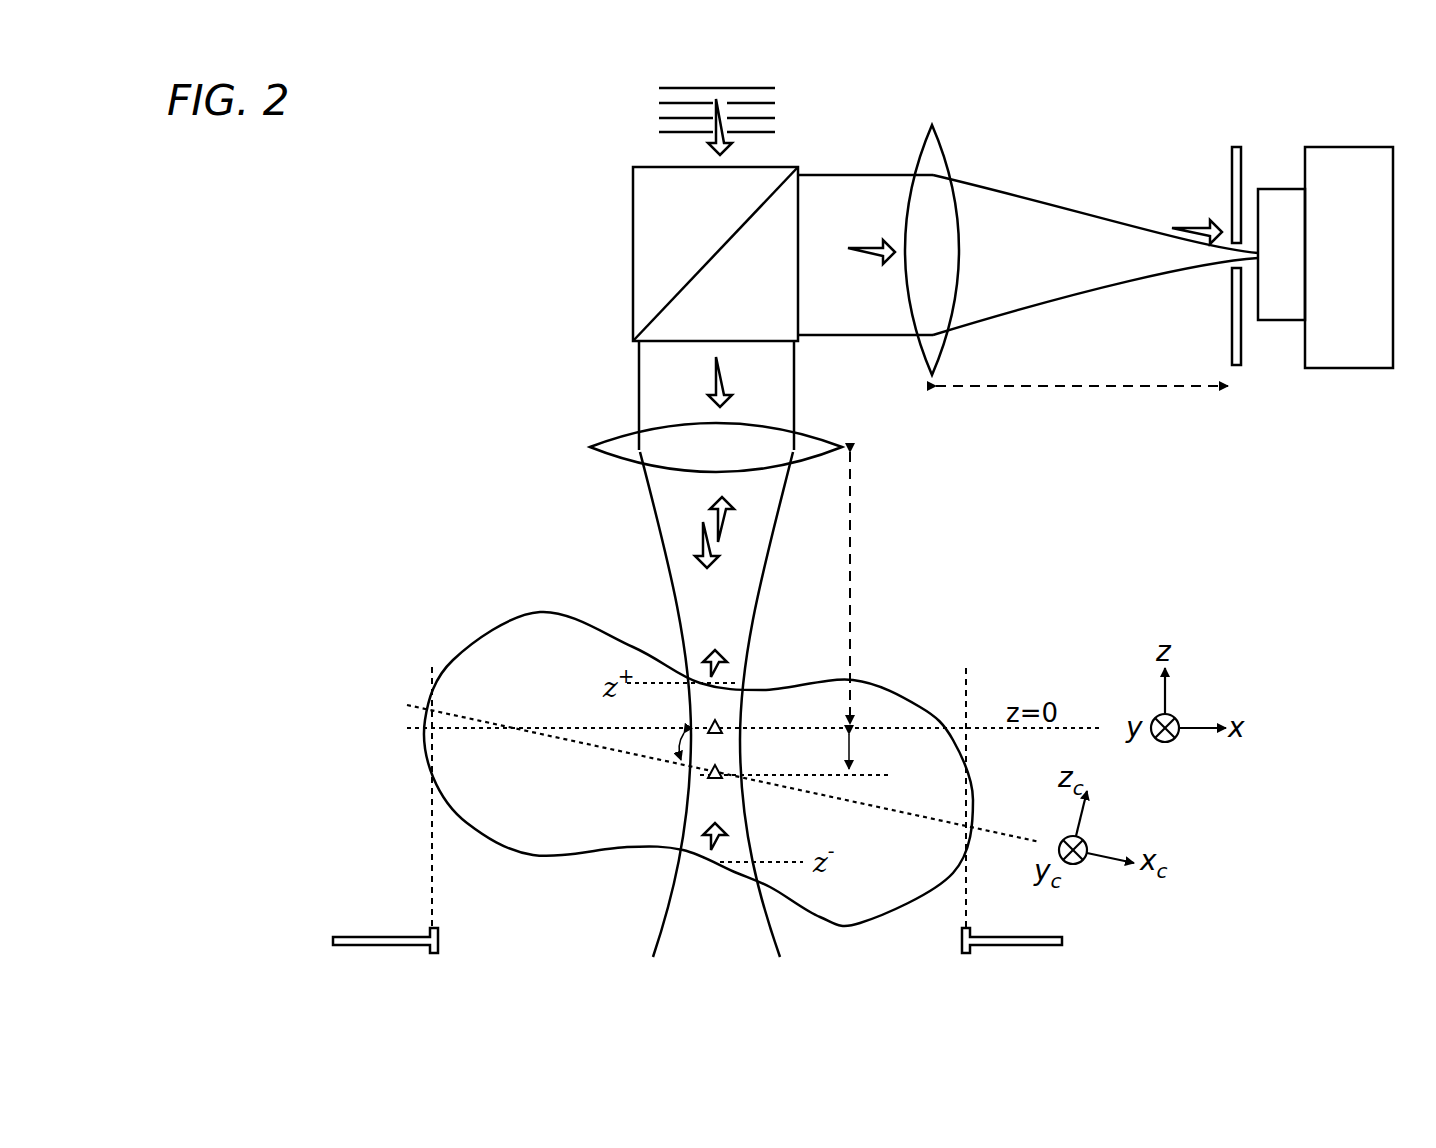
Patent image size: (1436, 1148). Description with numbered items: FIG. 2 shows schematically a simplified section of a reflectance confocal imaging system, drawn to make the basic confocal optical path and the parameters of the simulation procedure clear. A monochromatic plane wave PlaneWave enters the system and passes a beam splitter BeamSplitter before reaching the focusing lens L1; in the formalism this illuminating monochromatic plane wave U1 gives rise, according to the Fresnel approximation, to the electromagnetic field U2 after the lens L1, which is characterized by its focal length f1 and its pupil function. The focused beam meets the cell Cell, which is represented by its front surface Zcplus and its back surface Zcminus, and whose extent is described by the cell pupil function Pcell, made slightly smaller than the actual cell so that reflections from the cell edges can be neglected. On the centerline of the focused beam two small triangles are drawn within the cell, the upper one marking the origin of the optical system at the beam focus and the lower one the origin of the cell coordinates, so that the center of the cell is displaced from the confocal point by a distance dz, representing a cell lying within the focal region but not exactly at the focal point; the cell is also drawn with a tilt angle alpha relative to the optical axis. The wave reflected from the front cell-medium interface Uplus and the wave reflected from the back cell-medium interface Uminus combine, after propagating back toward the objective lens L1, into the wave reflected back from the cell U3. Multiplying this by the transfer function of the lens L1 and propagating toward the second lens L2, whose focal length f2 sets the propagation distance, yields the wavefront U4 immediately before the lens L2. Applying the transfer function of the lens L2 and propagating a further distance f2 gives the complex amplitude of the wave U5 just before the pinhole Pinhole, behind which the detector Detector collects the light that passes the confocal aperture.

The monochromatic plane wave PlaneWave is at (734, 98).
The beam splitter BeamSplitter is at (618, 254).
The lens L1 is at (697, 447).
The lens L2 is at (932, 233).
The pinhole Pinhole is at (1199, 238).
The detector Detector is at (1334, 277).
The monochromatic plane wave U1 is at (700, 382).
The electromagnetic field U2 is at (693, 532).
The wave reflected back from the cell U3 is at (741, 510).
The wavefront U4 is at (870, 239).
The complex amplitude of the wave U5 is at (1191, 218).
The wave reflected from the front cell-medium interface Uplus is at (719, 643).
The wave reflected from the back cell-medium interface Uminus is at (719, 866).
The focal length f1 is at (868, 588).
The focal length f2 is at (1082, 410).
The distance dz is at (871, 752).
The cell pupil function Pcell is at (697, 810).
The cell Cell is at (698, 769).
The front surface Zcplus is at (486, 617).
The back surface Zcminus is at (521, 866).
The tilt angle alpha is at (669, 745).